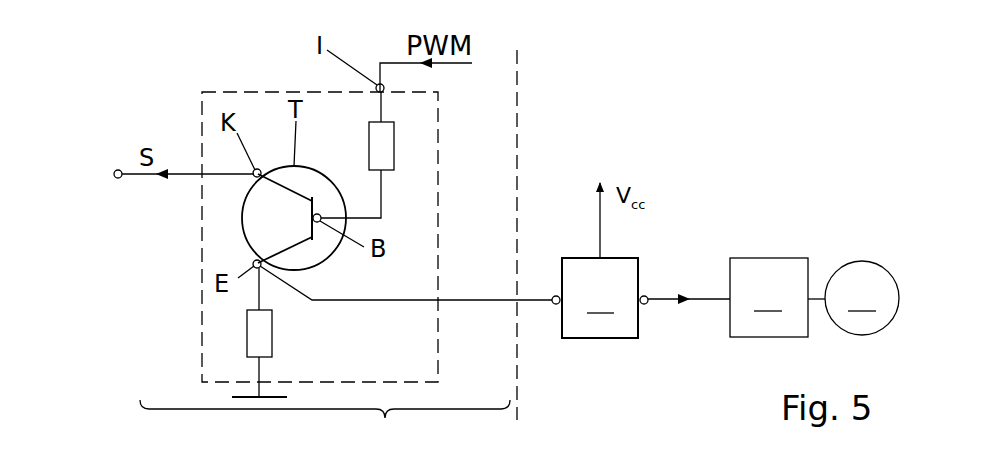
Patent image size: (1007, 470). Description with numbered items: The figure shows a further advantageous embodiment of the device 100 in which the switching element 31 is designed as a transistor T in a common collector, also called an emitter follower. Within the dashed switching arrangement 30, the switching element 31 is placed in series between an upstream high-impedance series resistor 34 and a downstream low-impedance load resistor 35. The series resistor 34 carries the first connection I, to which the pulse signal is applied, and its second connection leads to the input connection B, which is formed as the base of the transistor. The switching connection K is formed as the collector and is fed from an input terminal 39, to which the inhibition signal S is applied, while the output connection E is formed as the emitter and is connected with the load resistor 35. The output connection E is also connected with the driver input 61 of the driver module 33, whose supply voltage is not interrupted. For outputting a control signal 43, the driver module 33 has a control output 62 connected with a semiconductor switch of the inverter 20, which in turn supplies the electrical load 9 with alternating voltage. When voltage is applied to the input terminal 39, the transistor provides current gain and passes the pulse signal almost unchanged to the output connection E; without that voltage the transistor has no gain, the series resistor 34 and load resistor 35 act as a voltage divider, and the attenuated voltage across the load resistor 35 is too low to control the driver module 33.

The input terminal 39 is at (121, 179).
The switching arrangement 30 is at (439, 190).
The switching element 31 is at (208, 258).
The high-impedance series resistor 34 is at (394, 146).
The low-impedance load resistor 35 is at (272, 334).
The device 100 is at (325, 425).
The driver module 33 is at (600, 298).
The driver input 61 is at (554, 304).
The control output 62 is at (645, 304).
The control signal 43 is at (713, 296).
The inverter 20 is at (769, 297).
The electrical load 9 is at (862, 298).